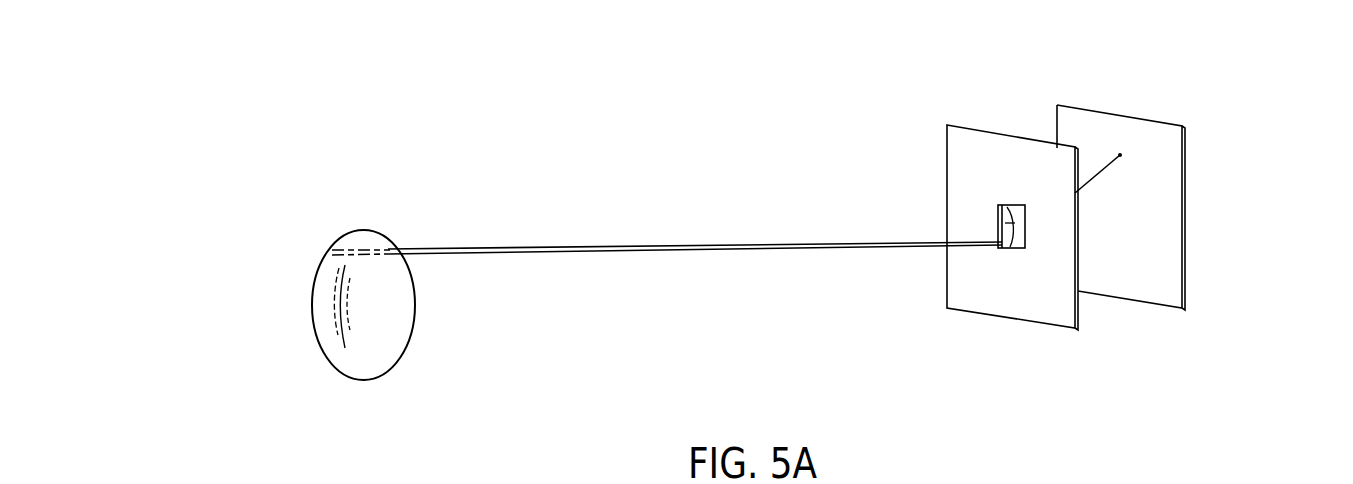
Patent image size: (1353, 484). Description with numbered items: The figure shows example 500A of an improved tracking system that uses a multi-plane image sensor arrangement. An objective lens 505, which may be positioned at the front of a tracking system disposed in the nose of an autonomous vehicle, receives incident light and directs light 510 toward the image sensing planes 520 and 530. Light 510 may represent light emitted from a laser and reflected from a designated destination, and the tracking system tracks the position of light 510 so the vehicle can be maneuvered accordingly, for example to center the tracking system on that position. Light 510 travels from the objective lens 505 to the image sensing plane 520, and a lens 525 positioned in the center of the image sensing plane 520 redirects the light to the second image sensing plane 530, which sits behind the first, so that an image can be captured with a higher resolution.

The example 500A is at (256, 90).
The objective lens 505 is at (314, 287).
The light 510 is at (600, 246).
The image sensing plane 520 is at (993, 132).
The lens 525 is at (1010, 225).
The image sensing plane 530 is at (1153, 118).